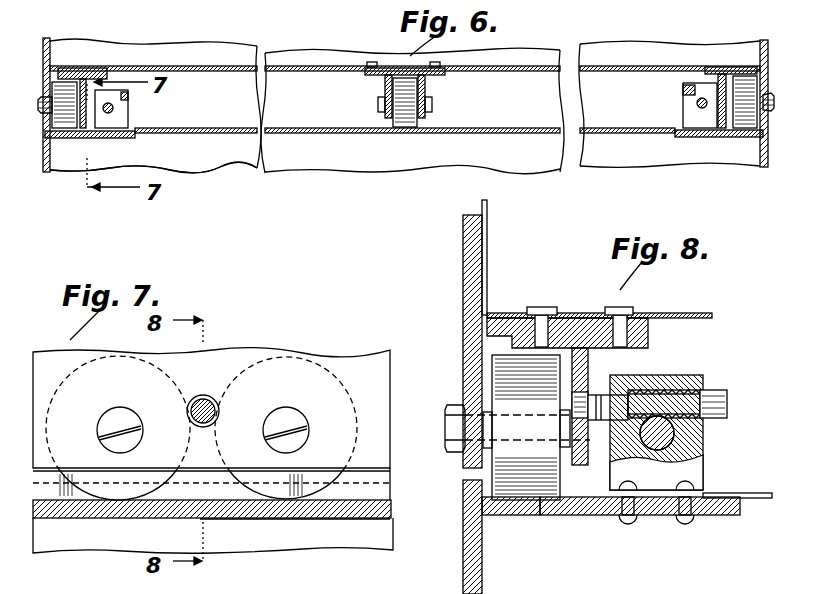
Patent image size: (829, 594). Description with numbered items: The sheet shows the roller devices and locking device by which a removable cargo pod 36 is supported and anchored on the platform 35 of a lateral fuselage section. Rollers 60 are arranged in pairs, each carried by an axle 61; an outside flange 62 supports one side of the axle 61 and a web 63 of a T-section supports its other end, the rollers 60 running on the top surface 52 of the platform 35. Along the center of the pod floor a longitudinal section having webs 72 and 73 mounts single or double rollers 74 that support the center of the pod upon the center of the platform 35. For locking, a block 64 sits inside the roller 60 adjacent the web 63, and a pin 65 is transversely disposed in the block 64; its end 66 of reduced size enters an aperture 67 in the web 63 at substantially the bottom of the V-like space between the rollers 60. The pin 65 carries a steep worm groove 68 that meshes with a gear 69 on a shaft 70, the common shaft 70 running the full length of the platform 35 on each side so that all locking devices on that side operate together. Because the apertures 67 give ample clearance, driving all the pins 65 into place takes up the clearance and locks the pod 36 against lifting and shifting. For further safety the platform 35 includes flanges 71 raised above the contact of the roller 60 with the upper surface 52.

In FIG. 6, the platform 35 is at (633, 163).
In FIG. 8, the platform 35 is at (463, 562).
In FIG. 6, the cargo pod 36 is at (93, 45).
In FIG. 8, the cargo pod 36 is at (489, 222).
In FIG. 6, the top surface of the platform 52 is at (168, 129).
In FIG. 7, the top surface of the platform 52 is at (55, 505).
In FIG. 8, the top surface of the platform 52 is at (588, 500).
In FIG. 6, the rollers 60 is at (65, 130).
In FIG. 7, the rollers 60 is at (233, 470).
In FIG. 8, the rollers 60 is at (520, 500).
In FIG. 6, the axle 61 is at (38, 108).
In FIG. 7, the axle 61 is at (125, 419).
In FIG. 8, the axle 61 is at (445, 436).
In FIG. 6, the outside flange 62 is at (43, 80).
In FIG. 8, the outside flange 62 is at (463, 376).
In FIG. 6, the web of T-section 63 is at (82, 72).
In FIG. 7, the web of T-section 63 is at (337, 356).
In FIG. 8, the web of T-section 63 is at (586, 354).
In FIG. 6, the block 64 is at (128, 122).
In FIG. 8, the block 64 is at (700, 377).
In FIG. 6, the pin 65 is at (128, 99).
In FIG. 8, the pin 65 is at (732, 396).
In FIG. 7, the end of reduced size 66 is at (203, 395).
In FIG. 8, the end of reduced size 66 is at (594, 395).
In FIG. 7, the aperture 67 is at (219, 407).
In FIG. 8, the aperture 67 is at (585, 412).
In FIG. 8, the steep worm groove 68 is at (661, 390).
In FIG. 8, the gear 69 is at (675, 433).
In FIG. 6, the shaft 70 is at (109, 114).
In FIG. 8, the shaft 70 is at (690, 460).
In FIG. 6, the flanges 71 is at (45, 134).
In FIG. 7, the flanges 71 is at (385, 488).
In FIG. 8, the flanges 71 is at (462, 490).
In FIG. 6, the web 72 is at (425, 82).
In FIG. 6, the web 73 is at (385, 80).
In FIG. 6, the rollers 74 is at (408, 120).